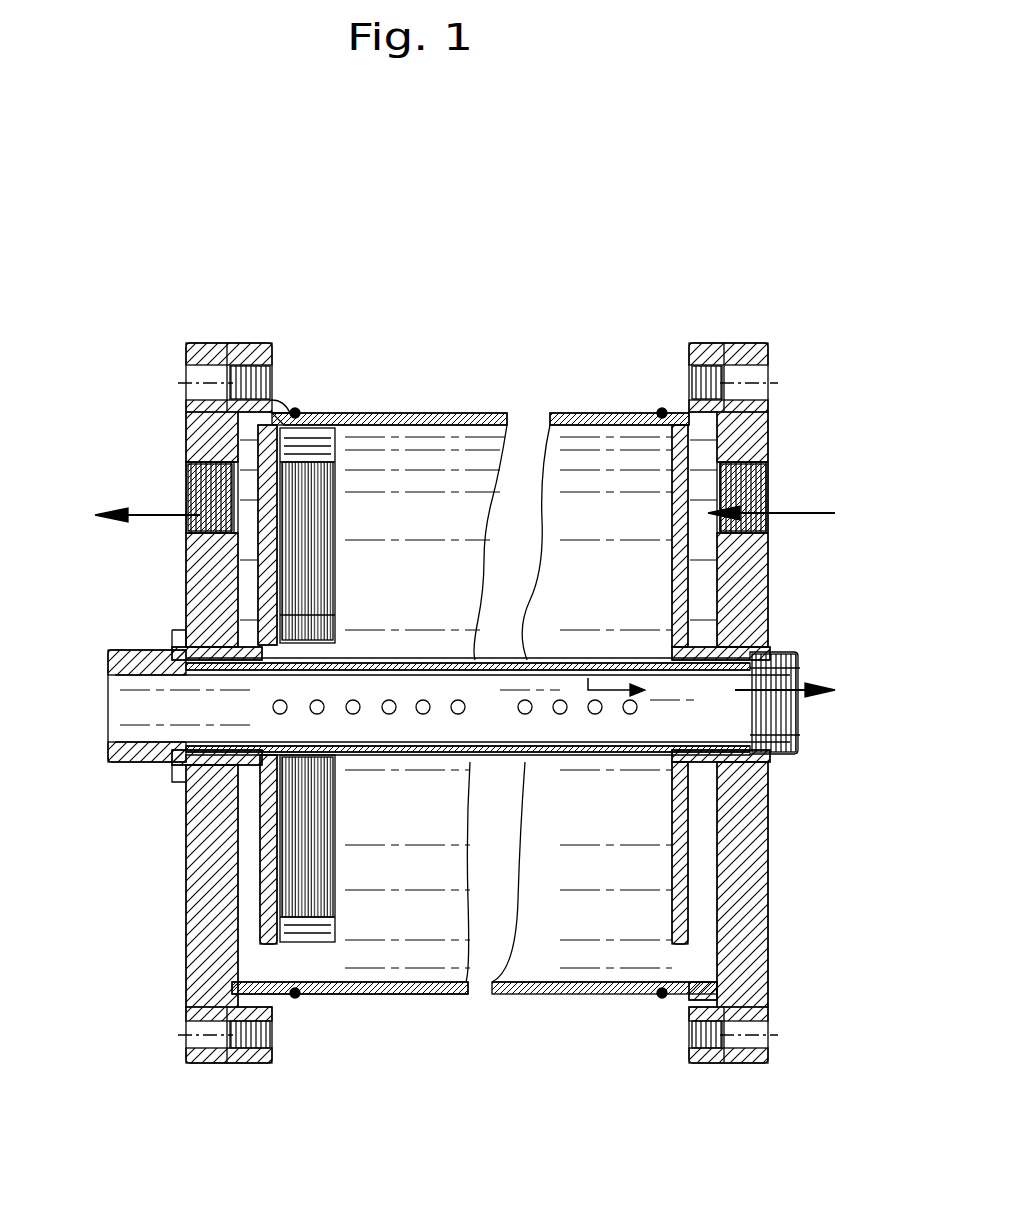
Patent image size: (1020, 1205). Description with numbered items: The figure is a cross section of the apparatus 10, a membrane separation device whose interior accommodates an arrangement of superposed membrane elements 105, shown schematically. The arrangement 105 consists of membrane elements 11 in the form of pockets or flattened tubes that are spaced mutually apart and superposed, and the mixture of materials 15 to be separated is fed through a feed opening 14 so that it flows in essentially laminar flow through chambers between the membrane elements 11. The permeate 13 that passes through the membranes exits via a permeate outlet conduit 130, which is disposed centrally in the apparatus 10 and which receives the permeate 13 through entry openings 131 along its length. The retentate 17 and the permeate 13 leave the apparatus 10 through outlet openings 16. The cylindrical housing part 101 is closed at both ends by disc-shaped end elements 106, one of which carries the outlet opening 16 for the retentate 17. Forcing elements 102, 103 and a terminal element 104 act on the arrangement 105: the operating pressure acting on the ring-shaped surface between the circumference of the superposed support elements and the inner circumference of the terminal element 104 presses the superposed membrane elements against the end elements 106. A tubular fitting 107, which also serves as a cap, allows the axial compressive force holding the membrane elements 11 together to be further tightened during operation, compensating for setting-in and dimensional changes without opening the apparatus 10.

The apparatus 10 is at (612, 256).
The membrane element 11 is at (335, 482).
The permeate 13 is at (802, 691).
The feed opening 14 is at (768, 470).
The mixture of materials 15 is at (788, 513).
The outlet opening 16 is at (205, 483).
The retentate 17 is at (132, 521).
The cylindrical housing part 101 is at (623, 412).
The forcing element 102 is at (700, 560).
The forcing element 103 is at (256, 572).
The terminal element 104 is at (712, 648).
The arrangement of superposed membrane elements 105 is at (437, 465).
The end element 106 is at (215, 872).
The tubular fitting 107 is at (150, 765).
The permeate outlet conduit 130 is at (552, 752).
The entry openings 131 is at (627, 714).